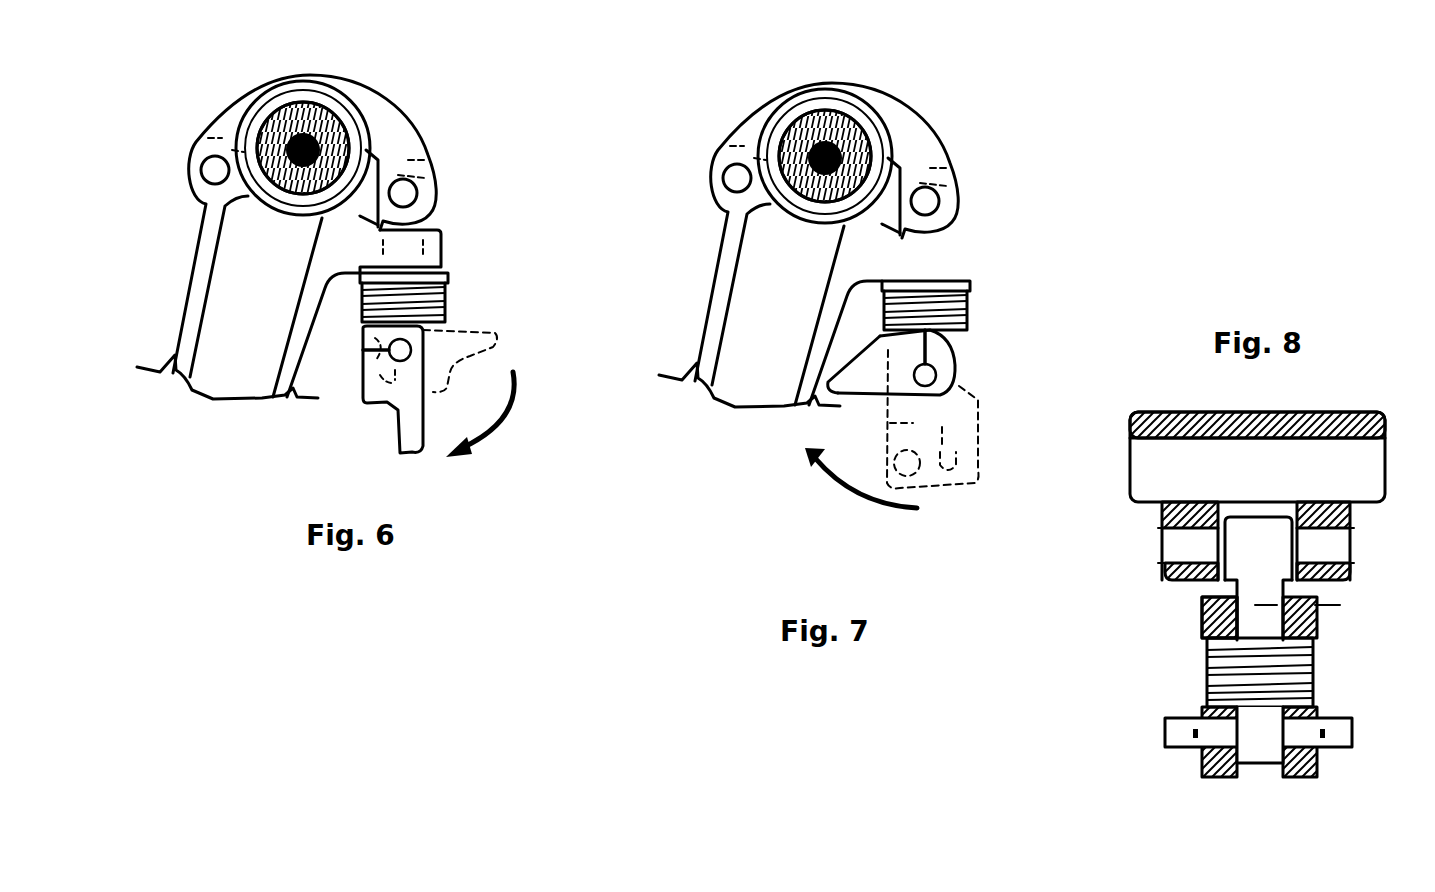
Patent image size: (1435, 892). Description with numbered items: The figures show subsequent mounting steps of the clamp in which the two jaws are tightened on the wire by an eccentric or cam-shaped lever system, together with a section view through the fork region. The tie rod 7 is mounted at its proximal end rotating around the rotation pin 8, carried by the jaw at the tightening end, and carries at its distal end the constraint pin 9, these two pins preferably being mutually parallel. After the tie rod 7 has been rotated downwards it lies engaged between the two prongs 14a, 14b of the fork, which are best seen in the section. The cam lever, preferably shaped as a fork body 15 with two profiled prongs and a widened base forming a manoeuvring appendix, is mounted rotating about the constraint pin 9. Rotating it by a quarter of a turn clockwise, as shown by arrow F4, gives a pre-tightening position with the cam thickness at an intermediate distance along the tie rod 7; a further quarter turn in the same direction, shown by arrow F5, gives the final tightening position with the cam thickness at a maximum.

In FIG. 6, the fork body 15 is at (363, 353).
In FIG. 6, the arrow F4 is at (500, 423).
In FIG. 7, the arrow F5 is at (857, 502).
In FIG. 8, the rotation pin 8 is at (1333, 545).
In FIG. 8, the tie rod 7 is at (1263, 590).
In FIG. 8, the prong of fork 14a is at (1203, 617).
In FIG. 8, the prong of fork 14b is at (1313, 642).
In FIG. 8, the constraint pin 9 is at (1337, 743).